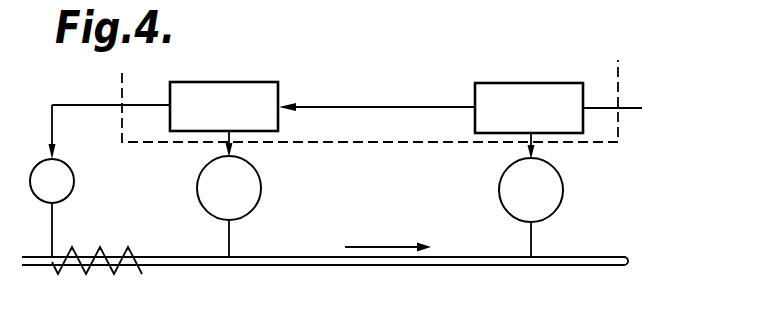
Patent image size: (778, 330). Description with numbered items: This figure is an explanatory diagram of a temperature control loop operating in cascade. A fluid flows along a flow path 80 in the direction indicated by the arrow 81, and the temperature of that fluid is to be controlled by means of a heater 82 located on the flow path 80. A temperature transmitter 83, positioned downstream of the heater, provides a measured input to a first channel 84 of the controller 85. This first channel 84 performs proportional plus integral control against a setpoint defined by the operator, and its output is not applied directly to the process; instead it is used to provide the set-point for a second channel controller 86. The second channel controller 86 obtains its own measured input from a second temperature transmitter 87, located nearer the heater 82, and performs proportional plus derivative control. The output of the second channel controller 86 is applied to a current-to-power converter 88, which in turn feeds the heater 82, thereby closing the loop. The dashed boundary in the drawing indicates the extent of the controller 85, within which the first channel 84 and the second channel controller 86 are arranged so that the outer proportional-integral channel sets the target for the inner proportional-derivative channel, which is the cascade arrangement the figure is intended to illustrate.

The flow path 80 is at (512, 263).
The arrow 81 is at (360, 246).
The heater 82 is at (142, 274).
The temperature transmitter 83 is at (563, 192).
The first channel 84 is at (585, 73).
The controller 85 is at (620, 145).
The second channel controller 86 is at (273, 87).
The temperature transmitter 87 is at (260, 183).
The current-to-power converter 88 is at (67, 180).